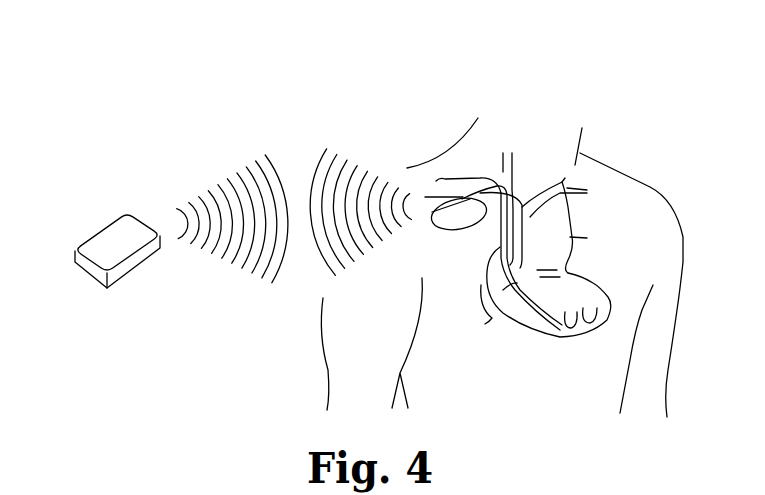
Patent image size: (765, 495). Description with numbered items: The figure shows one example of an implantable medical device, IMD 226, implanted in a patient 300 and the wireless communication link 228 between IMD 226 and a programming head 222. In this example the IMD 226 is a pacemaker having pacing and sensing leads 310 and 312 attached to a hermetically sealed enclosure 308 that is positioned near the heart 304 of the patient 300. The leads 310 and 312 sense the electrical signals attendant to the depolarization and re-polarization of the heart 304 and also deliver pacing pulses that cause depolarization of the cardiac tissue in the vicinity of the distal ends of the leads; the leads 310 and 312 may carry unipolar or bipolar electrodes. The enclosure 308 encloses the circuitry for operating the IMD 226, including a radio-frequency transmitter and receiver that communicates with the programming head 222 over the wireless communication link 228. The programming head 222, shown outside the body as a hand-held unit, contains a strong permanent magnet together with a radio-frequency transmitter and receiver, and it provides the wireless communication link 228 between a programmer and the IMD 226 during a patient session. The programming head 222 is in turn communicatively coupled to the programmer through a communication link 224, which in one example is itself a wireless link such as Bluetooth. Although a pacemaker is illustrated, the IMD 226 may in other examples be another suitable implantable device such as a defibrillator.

The programming head 222 is at (89, 236).
The communication link 224 is at (87, 276).
The IMD 226 is at (428, 243).
The wireless communication link 228 is at (297, 128).
The patient 300 is at (612, 178).
The heart 304 is at (545, 338).
The hermetically sealed enclosure 308 is at (450, 231).
The pacing and sensing lead 310 is at (495, 257).
The pacing and sensing lead 312 is at (500, 310).